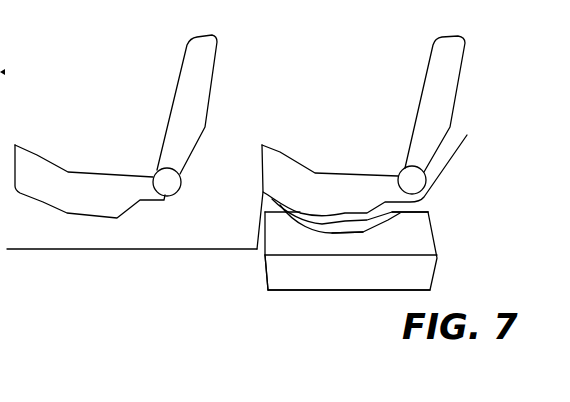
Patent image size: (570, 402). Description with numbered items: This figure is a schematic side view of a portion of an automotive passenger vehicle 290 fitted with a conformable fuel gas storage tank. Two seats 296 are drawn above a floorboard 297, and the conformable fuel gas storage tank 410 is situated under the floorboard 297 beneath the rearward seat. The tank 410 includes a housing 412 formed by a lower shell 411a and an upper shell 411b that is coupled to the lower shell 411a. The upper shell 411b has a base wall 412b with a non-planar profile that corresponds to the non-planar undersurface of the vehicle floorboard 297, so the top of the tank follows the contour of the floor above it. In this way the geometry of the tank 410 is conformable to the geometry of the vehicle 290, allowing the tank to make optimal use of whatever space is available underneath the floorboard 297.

The automotive passenger vehicle 290 is at (343, 62).
The seats 296 is at (340, 130).
The floorboard 297 is at (49, 258).
The conformable fuel gas storage tank 410 is at (451, 251).
The lower shell 411a is at (356, 308).
The upper shell 411b is at (450, 218).
The housing 412 is at (255, 301).
The base wall 412b is at (337, 233).